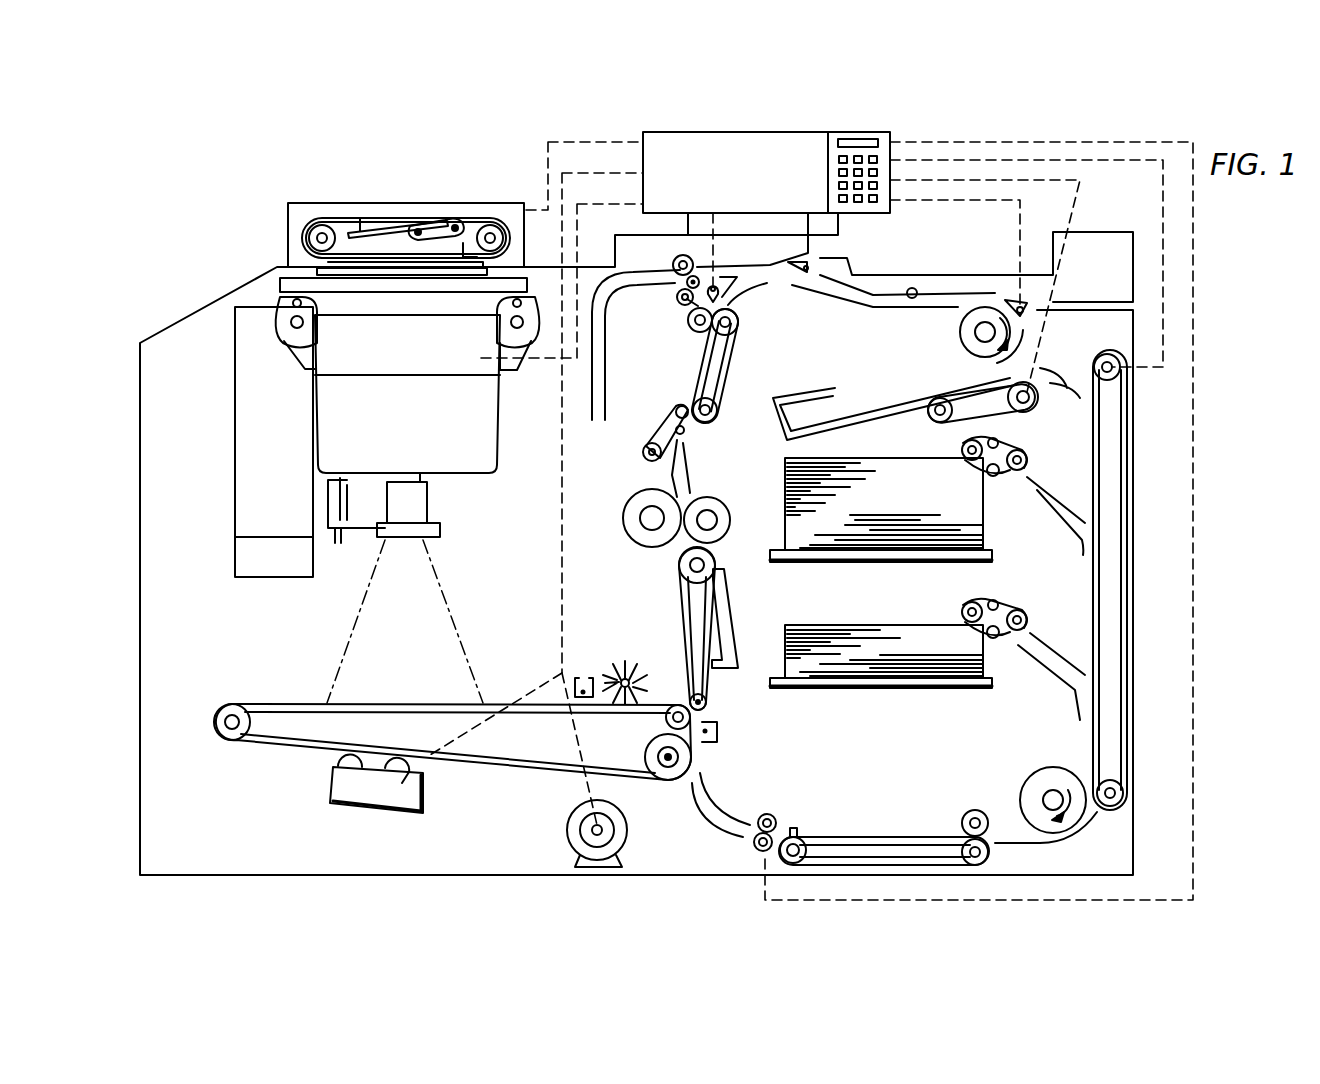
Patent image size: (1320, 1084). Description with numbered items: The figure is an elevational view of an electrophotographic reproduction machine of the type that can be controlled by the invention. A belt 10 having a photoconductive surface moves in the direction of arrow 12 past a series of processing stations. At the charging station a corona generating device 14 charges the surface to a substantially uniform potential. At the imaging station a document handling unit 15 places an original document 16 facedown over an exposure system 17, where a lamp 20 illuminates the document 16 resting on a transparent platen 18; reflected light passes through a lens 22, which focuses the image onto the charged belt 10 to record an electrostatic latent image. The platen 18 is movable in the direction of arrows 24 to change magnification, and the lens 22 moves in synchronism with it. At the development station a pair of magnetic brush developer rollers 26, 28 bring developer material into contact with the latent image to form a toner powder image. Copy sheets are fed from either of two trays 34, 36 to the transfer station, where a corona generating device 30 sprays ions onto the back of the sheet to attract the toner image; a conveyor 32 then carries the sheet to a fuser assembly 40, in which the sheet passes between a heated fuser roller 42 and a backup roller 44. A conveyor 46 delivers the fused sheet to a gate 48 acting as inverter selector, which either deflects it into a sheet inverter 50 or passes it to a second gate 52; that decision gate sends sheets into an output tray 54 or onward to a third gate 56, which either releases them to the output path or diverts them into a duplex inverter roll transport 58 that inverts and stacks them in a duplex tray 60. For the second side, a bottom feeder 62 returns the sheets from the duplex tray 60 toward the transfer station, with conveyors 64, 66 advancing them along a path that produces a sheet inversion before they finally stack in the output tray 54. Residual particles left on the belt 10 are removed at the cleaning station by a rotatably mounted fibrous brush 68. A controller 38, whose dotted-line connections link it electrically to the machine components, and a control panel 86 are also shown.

The belt 10 is at (497, 703).
The arrow 12 is at (420, 682).
The corona generating device 14 is at (582, 676).
The document handling unit 15 is at (450, 187).
The original document 16 is at (368, 262).
The exposure system 17 is at (535, 480).
The transparent platen 18 is at (400, 267).
The lamp 20 is at (350, 385).
The lens 22 is at (418, 505).
The arrows 24 is at (192, 394).
The magnetic brush developer roller 26 is at (340, 765).
The magnetic brush developer roller 28 is at (423, 794).
The corona generating device 30 is at (717, 734).
The conveyor 32 is at (680, 600).
The tray 34 is at (930, 554).
The tray 36 is at (917, 690).
The controller 38 is at (643, 137).
The fuser assembly 40 is at (717, 504).
The heated fuser roller 42 is at (634, 497).
The backup roller 44 is at (722, 522).
The conveyor 46 is at (737, 383).
The gate 48 is at (750, 293).
The sheet inverter 50 is at (606, 316).
The second gate 52 is at (805, 283).
The output tray 54 is at (945, 273).
The third gate 56 is at (1022, 308).
The duplex inverter roll transport 58 is at (1022, 343).
The duplex tray 60 is at (877, 414).
The bottom feeder 62 is at (940, 415).
The conveyor 64 is at (1122, 504).
The conveyor 66 is at (870, 833).
The fibrous brush 68 is at (655, 650).
The control panel 86 is at (892, 152).